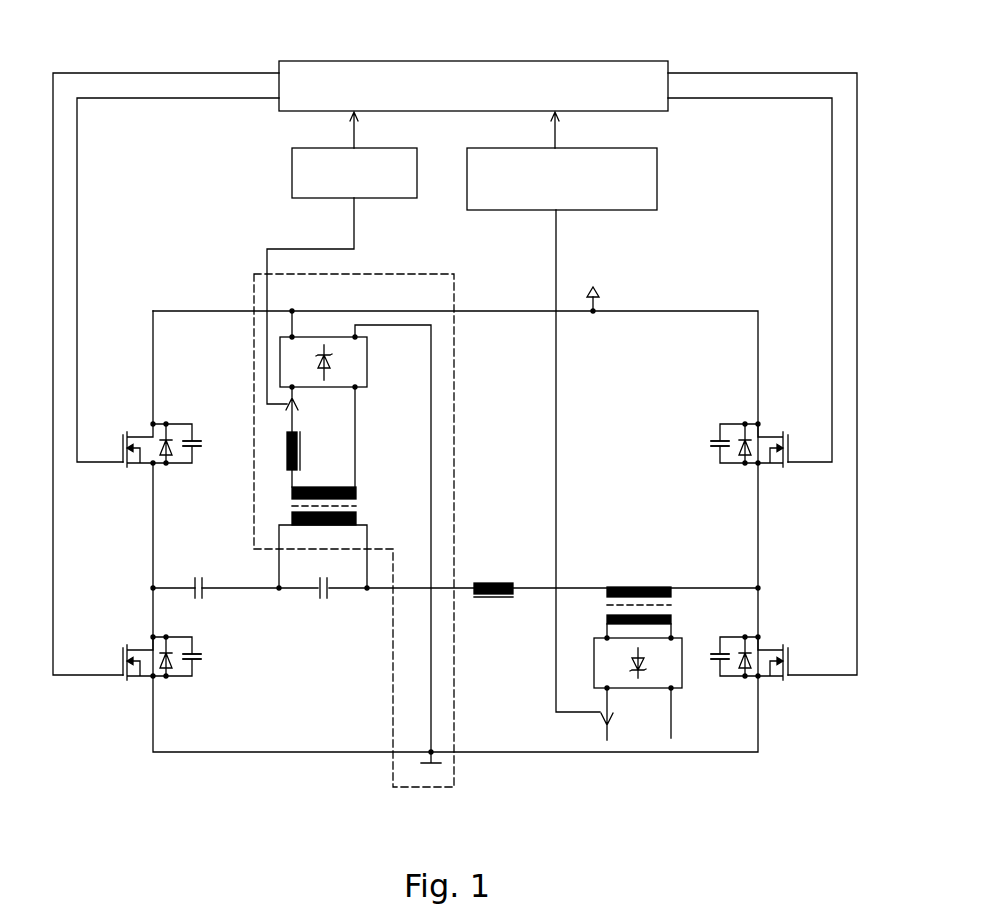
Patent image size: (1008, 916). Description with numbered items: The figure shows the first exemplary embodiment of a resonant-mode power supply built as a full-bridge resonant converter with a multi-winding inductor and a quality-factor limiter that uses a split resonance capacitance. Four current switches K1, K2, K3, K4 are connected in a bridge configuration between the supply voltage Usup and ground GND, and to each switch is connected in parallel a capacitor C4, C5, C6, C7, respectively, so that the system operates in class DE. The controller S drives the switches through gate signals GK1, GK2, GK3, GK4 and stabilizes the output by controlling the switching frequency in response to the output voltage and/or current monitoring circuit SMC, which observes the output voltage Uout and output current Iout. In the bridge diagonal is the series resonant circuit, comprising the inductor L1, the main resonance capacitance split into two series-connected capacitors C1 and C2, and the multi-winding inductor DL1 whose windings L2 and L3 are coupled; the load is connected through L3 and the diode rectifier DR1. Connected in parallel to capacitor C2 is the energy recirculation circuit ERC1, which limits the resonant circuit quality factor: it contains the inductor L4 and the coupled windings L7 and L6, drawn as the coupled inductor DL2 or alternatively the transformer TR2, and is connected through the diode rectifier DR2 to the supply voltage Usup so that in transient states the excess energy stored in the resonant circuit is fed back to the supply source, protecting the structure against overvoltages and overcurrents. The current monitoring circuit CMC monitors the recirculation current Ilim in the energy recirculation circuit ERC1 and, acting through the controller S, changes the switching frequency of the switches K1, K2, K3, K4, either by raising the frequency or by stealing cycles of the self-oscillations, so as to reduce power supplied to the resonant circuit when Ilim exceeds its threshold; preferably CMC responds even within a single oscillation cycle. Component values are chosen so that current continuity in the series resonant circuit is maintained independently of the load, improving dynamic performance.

The controller S is at (481, 74).
The gate control signal for K1 GK1 is at (191, 278).
The gate control signal for K2 GK2 is at (179, 372).
The gate control signal for K3 GK3 is at (730, 278).
The gate control signal for K4 GK4 is at (742, 372).
The current monitoring circuit CMC is at (336, 258).
The output voltage and/or current monitoring circuit SMC is at (578, 412).
The energy recirculation circuit ERC1 is at (354, 523).
The supply voltage Usup is at (593, 294).
The diode rectifier DR2 is at (323, 350).
The ground GND is at (398, 552).
The recirculation circuit current Ilim is at (305, 409).
The inductor L4 is at (303, 459).
The inductor winding L7 is at (309, 443).
The inductor winding L6 is at (309, 518).
The coupled inductor DL2 is at (337, 492).
The transformer TR2 is at (383, 495).
The resonance capacitor C1 is at (198, 580).
The resonance capacitor C2 is at (323, 561).
The inductor L1 is at (493, 581).
The inductor winding L2 is at (639, 582).
The multi-winding inductor DL1 is at (655, 606).
The inductor winding L3 is at (627, 626).
The diode rectifier DR1 is at (638, 663).
The output current Iout is at (595, 714).
The output voltage Uout is at (650, 713).
The current switch K1 is at (148, 444).
The current switch K2 is at (148, 657).
The current switch K3 is at (760, 444).
The current switch K4 is at (760, 657).
The parallel capacitor C4 is at (197, 437).
The parallel capacitor C5 is at (197, 650).
The parallel capacitor C6 is at (712, 437).
The parallel capacitor C7 is at (712, 650).